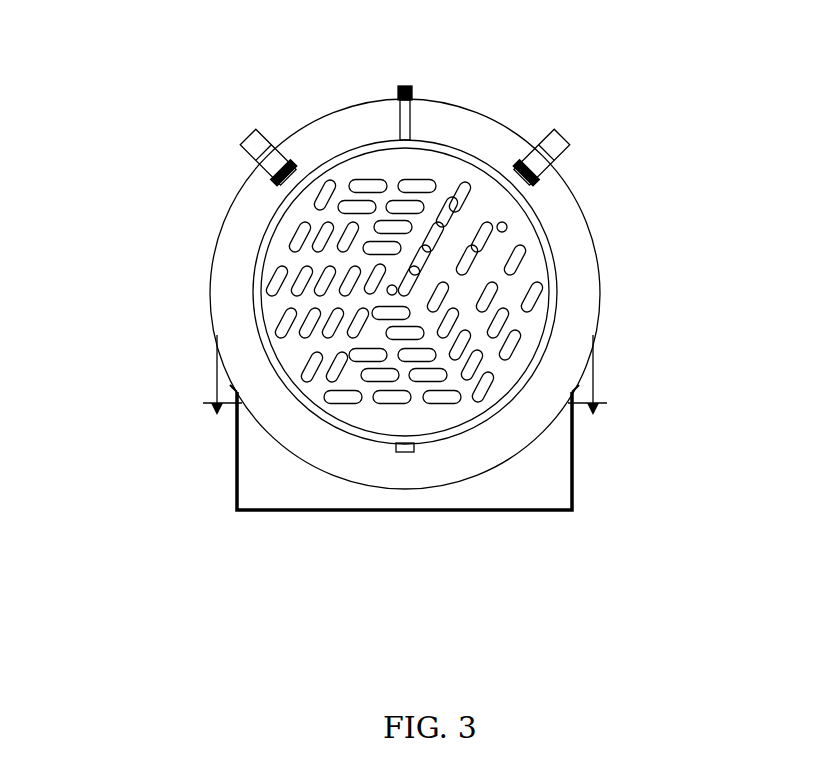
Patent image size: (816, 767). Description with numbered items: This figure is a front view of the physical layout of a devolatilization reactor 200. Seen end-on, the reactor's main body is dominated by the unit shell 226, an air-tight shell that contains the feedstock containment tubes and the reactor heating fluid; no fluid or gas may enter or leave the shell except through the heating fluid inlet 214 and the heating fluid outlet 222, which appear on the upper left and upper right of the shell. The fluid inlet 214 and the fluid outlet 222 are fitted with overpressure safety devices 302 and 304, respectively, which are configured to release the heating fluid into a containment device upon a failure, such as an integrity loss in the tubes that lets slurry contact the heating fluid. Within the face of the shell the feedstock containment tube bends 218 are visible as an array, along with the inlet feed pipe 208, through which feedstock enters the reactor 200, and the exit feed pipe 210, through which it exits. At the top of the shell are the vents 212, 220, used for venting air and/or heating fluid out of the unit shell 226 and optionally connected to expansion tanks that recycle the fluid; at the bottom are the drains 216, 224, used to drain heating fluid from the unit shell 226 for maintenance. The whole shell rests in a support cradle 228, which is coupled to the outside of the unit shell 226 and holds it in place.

The devolatilization reactor 200 is at (97, 156).
The inlet feed pipe 208 is at (398, 289).
The exit feed pipe 210 is at (508, 226).
The vent 212 is at (395, 79).
The vent 220 is at (405, 86).
The heating fluid inlet 214 is at (268, 137).
The overpressure safety device 302 is at (282, 175).
The heating fluid outlet 222 is at (548, 142).
The overpressure safety device 304 is at (534, 168).
The drain 216 is at (451, 510).
The drain 224 is at (408, 452).
The feedstock containment tube bends 218 is at (519, 346).
The unit shell 226 is at (252, 286).
The support cradle 228 is at (612, 448).